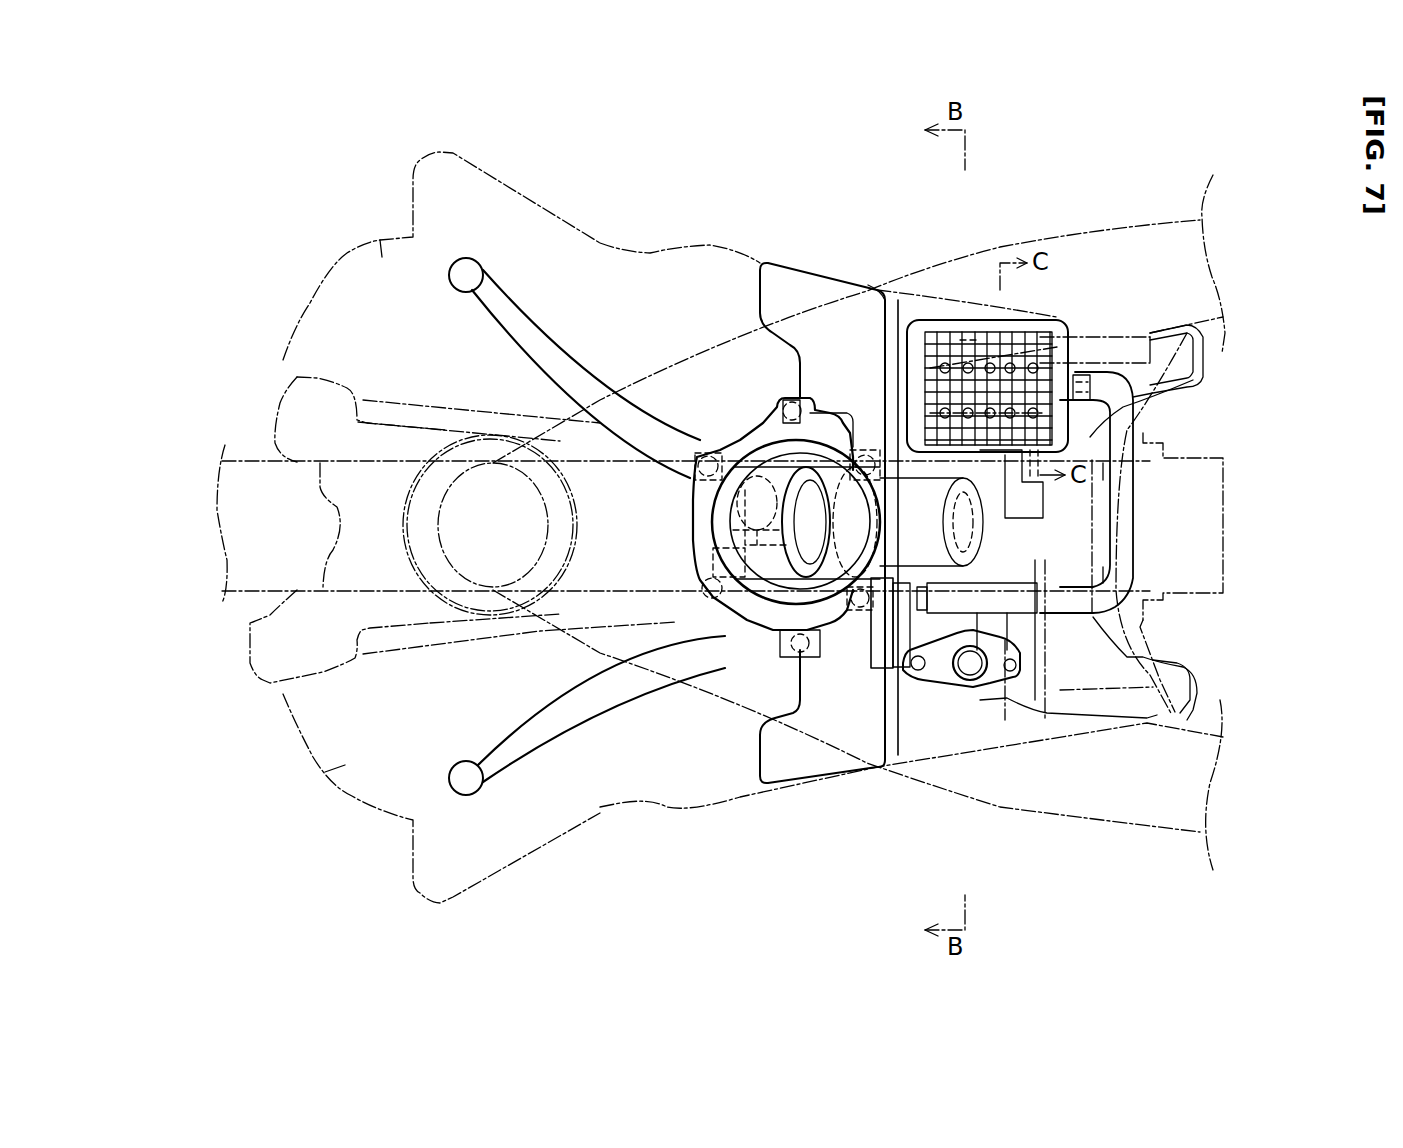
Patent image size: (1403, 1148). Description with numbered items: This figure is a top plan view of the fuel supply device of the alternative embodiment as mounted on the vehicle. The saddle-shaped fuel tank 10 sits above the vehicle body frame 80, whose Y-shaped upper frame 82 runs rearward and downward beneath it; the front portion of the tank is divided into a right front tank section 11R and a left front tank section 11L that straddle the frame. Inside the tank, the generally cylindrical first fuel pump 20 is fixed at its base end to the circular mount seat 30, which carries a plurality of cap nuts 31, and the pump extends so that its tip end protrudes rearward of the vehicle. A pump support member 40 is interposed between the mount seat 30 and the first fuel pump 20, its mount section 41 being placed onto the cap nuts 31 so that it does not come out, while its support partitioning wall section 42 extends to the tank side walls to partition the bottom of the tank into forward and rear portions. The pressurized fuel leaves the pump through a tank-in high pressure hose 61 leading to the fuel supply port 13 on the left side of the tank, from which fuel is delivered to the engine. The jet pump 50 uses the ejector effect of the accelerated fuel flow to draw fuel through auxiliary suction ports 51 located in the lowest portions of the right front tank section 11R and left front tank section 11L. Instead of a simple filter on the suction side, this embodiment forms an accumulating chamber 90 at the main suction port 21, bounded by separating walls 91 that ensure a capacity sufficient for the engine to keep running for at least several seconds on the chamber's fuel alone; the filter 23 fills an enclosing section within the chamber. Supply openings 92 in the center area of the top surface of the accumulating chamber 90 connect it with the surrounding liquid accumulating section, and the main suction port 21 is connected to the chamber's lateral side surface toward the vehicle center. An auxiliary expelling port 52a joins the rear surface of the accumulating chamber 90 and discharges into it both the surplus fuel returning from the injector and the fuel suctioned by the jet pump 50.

The fuel tank 10 is at (625, 805).
The right front tank section 11R is at (382, 257).
The left front tank section 11L is at (345, 765).
The fuel supply port 13 is at (990, 690).
The first fuel pump 20 is at (930, 468).
The main suction port 21 is at (1060, 460).
The filter 23 is at (1012, 358).
The mount seat 30 is at (742, 435).
The cap nuts 31 is at (802, 425).
The pump support member 40 is at (885, 722).
The mount section 41 is at (898, 300).
The support partitioning wall section 42 is at (870, 322).
The jet pump 50 is at (883, 673).
The auxiliary suction ports 51 is at (465, 255).
The auxiliary expelling port 52a is at (1083, 378).
The tank-in high pressure hose 61 is at (1010, 630).
The vehicle body frame 80 is at (1097, 818).
The upper frame 82 is at (260, 473).
The accumulating chamber 90 is at (1060, 318).
The separating walls 91 is at (960, 360).
The supply openings 92 is at (997, 370).